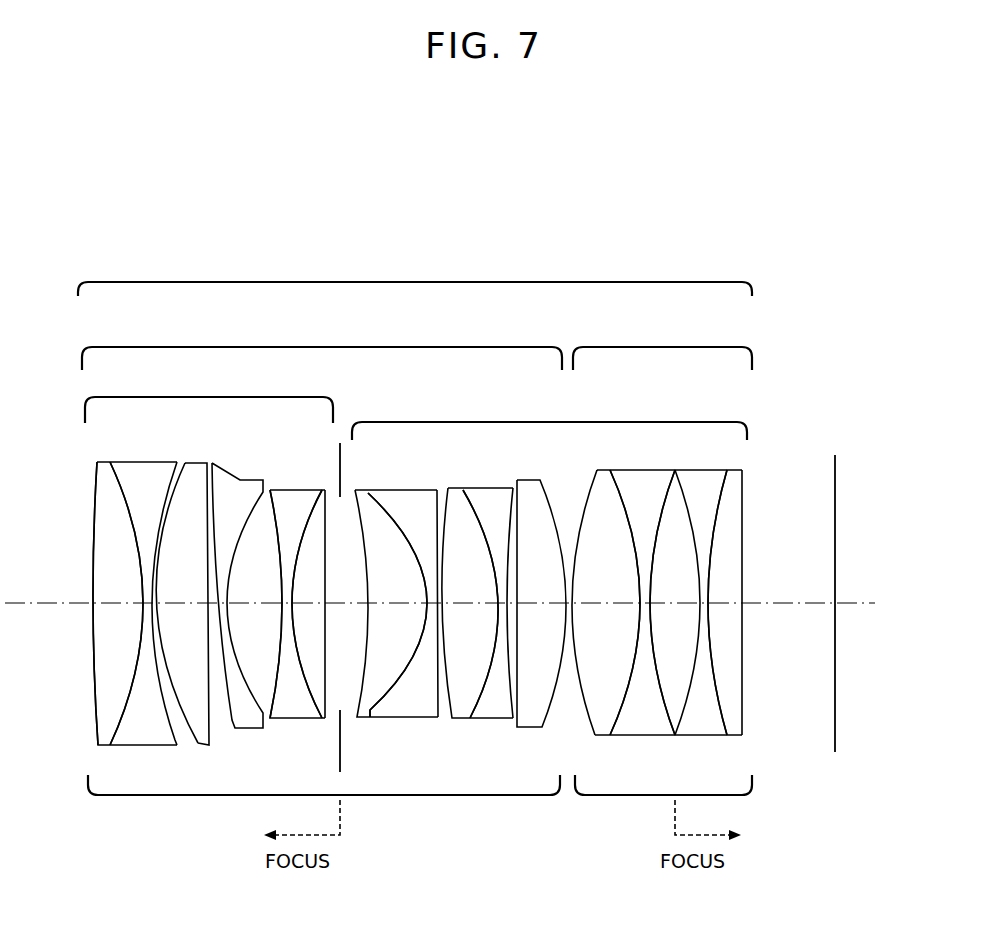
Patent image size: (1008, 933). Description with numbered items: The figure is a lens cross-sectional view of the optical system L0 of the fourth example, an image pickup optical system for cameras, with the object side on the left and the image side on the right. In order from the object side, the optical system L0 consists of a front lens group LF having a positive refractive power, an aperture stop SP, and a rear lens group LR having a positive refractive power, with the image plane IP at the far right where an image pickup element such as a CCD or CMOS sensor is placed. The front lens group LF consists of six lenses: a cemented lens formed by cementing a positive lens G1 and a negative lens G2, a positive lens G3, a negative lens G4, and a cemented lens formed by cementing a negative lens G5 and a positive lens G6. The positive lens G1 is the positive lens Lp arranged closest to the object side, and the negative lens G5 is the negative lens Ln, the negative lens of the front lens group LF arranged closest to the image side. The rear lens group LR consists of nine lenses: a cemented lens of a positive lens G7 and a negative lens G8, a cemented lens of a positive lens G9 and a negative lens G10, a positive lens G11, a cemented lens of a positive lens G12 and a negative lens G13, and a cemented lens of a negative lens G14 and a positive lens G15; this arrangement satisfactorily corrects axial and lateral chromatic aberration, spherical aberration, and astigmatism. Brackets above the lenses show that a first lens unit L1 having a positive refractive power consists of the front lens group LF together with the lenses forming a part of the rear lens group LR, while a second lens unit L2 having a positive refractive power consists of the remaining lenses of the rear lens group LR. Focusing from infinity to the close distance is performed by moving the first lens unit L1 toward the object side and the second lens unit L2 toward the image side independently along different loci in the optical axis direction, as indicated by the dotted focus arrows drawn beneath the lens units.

The optical system L0 is at (415, 276).
The first lens unit L1 is at (322, 342).
The second lens unit L2 is at (662, 342).
The front lens group LF is at (209, 398).
The rear lens group LR is at (549, 418).
The aperture stop SP is at (340, 424).
The image plane IP is at (835, 517).
The positive lens Lp is at (106, 577).
The negative lens Ln is at (271, 569).
The positive lens G1 is at (105, 480).
The negative lens G2 is at (150, 472).
The positive lens G3 is at (190, 492).
The negative lens G4 is at (253, 492).
The negative lens G5 is at (300, 507).
The positive lens G6 is at (317, 508).
The positive lens G7 is at (362, 487).
The negative lens G8 is at (390, 500).
The positive lens G9 is at (457, 493).
The negative lens G10 is at (488, 492).
The positive lens G11 is at (530, 490).
The positive lens G12 is at (603, 482).
The negative lens G13 is at (643, 480).
The negative lens G14 is at (690, 485).
The positive lens G15 is at (730, 497).